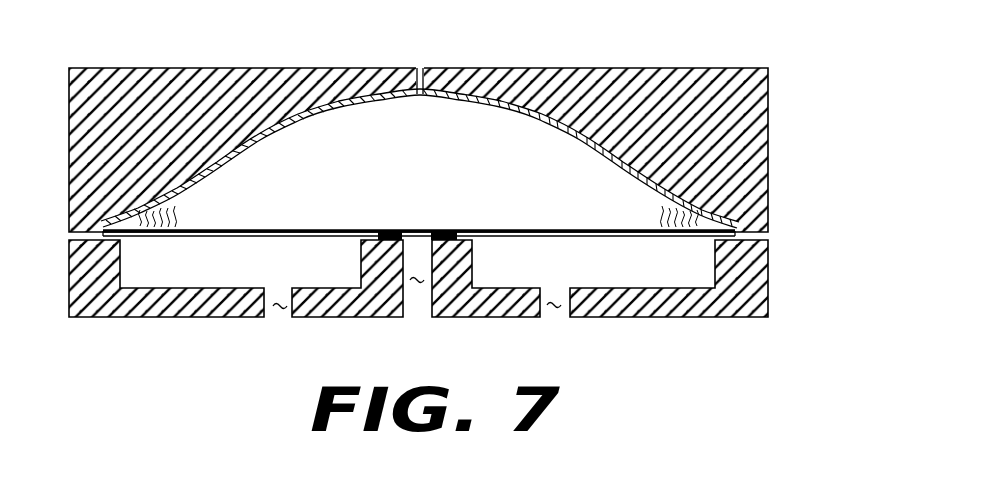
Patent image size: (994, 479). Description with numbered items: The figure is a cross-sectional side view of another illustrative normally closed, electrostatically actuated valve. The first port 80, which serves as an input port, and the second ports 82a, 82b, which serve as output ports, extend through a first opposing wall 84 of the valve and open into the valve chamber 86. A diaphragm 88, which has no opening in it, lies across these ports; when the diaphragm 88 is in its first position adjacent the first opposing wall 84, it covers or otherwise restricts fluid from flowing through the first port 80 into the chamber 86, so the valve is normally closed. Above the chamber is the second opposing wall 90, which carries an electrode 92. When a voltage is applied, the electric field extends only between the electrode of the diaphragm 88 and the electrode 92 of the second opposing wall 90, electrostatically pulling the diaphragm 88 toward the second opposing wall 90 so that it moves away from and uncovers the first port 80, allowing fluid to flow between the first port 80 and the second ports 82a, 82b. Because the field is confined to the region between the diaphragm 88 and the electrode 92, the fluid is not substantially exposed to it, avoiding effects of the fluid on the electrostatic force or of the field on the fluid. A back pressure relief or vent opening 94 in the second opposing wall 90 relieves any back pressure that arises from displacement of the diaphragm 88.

The first port 80 is at (415, 285).
The second port 82a is at (556, 313).
The second port 82b is at (283, 312).
The first opposing wall 84 is at (138, 286).
The valve chamber 86 is at (428, 176).
The diaphragm 88 is at (540, 229).
The second opposing wall 90 is at (166, 198).
The electrode 92 is at (238, 152).
The vent opening 94 is at (420, 68).